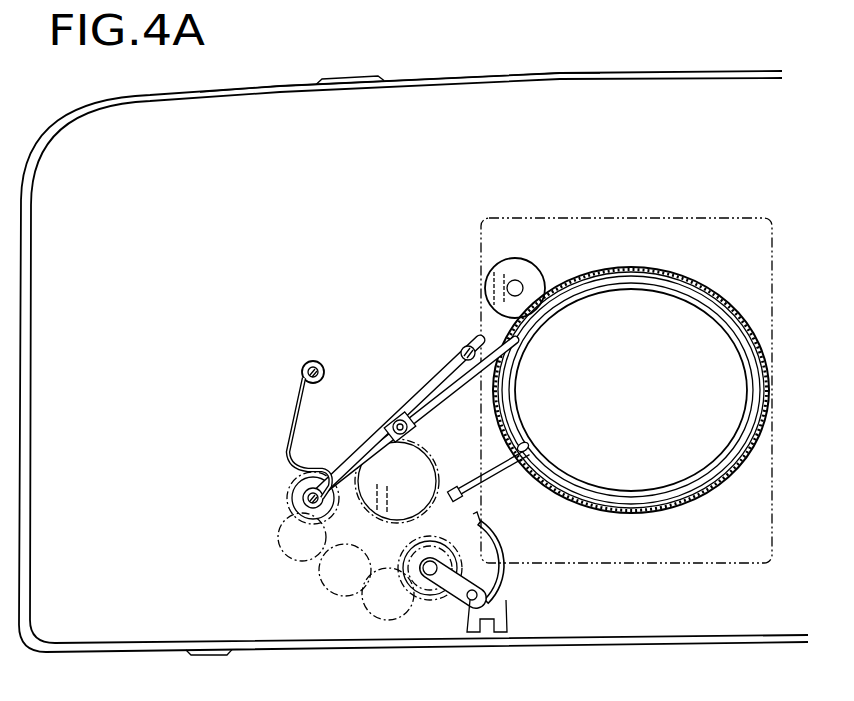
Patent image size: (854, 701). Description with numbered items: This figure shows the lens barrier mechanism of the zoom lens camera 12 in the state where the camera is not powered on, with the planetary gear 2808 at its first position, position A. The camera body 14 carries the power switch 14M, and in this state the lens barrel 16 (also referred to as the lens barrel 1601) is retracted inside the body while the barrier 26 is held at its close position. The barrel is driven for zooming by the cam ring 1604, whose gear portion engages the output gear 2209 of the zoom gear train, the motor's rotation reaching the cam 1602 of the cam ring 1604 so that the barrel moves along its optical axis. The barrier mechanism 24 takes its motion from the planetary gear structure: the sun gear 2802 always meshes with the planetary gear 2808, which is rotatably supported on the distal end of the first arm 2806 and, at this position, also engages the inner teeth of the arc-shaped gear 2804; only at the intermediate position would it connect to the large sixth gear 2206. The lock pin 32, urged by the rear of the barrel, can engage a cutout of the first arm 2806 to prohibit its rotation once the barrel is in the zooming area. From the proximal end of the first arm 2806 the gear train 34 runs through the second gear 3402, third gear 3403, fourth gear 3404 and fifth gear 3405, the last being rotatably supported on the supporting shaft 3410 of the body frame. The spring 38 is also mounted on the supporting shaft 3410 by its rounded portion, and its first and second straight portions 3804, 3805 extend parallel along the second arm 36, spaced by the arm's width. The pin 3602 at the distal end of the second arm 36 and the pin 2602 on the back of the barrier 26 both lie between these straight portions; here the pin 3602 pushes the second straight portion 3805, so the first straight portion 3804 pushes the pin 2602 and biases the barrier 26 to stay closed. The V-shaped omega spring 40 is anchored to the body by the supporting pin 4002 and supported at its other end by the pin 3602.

The zoom lens camera 12 is at (637, 70).
The camera body 14 is at (510, 74).
The power switch 14M is at (345, 79).
The lens barrel 16 is at (658, 371).
The lens barrel 1601 is at (692, 478).
The cam 1602 is at (612, 269).
The cam ring 1604 is at (735, 288).
The barrier mechanism 24 is at (233, 442).
The barrier 26 is at (482, 218).
The pin 2602 is at (463, 346).
The sixth gear 2206 is at (478, 508).
The output gear 2209 is at (553, 251).
The sun gear 2802 is at (400, 553).
The arc-shaped gear 2804 is at (507, 556).
The first arm 2806 is at (505, 617).
The planetary gear 2808 is at (452, 617).
The lock pin 32 is at (457, 488).
The gear train 34 is at (283, 552).
The second gear 3402 is at (357, 603).
The third gear 3403 is at (308, 574).
The fourth gear 3404 is at (278, 547).
The fifth gear 3405 is at (292, 503).
The supporting shaft 3410 is at (303, 499).
The second arm 36 is at (358, 436).
The pin 3602 is at (392, 425).
The spring 38 is at (440, 376).
The first straight portion 3804 is at (410, 396).
The second straight portion 3805 is at (465, 402).
The omega spring 40 is at (288, 408).
The supporting pin 4002 is at (305, 362).